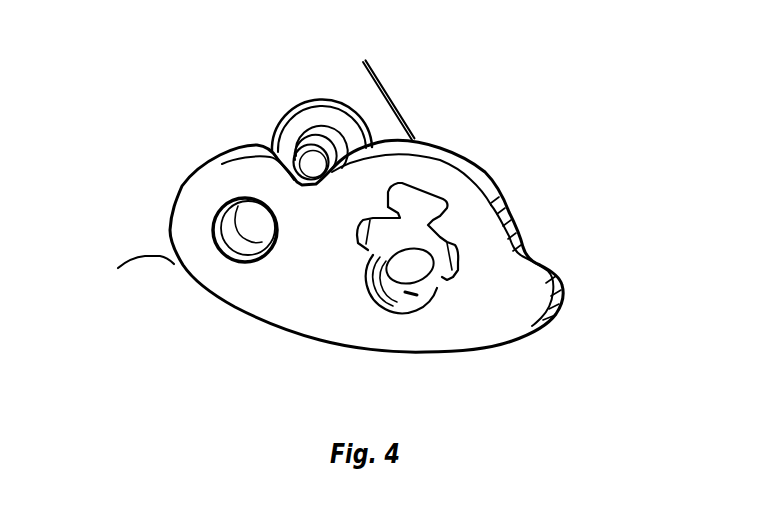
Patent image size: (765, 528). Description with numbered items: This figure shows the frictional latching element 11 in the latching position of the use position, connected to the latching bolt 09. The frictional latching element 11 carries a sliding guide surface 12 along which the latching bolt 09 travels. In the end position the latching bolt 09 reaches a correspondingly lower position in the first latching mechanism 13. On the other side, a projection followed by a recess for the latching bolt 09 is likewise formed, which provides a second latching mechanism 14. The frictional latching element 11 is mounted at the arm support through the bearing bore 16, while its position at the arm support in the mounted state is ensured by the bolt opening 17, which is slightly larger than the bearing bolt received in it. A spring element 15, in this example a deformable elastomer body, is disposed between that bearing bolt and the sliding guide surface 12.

The latching bolt 09 is at (308, 165).
The frictional latching element 11 is at (297, 290).
The sliding guide surface 12 is at (458, 167).
The first latching mechanism 13 is at (352, 101).
The second latching mechanism 14 is at (527, 231).
The spring element 15 is at (413, 213).
The bearing bore 16 is at (252, 242).
The bolt opening 17 is at (413, 300).